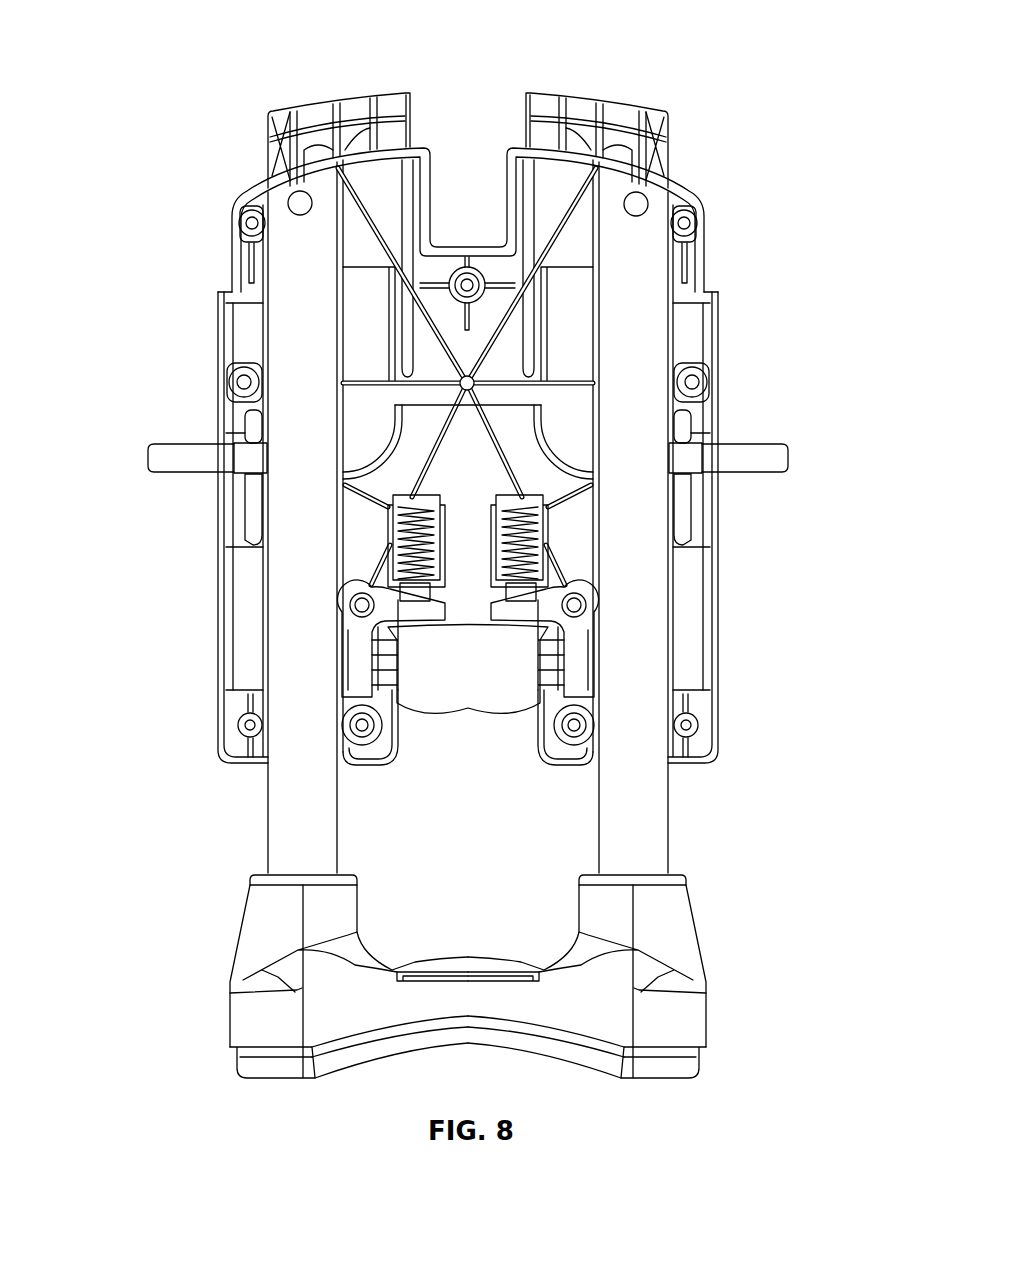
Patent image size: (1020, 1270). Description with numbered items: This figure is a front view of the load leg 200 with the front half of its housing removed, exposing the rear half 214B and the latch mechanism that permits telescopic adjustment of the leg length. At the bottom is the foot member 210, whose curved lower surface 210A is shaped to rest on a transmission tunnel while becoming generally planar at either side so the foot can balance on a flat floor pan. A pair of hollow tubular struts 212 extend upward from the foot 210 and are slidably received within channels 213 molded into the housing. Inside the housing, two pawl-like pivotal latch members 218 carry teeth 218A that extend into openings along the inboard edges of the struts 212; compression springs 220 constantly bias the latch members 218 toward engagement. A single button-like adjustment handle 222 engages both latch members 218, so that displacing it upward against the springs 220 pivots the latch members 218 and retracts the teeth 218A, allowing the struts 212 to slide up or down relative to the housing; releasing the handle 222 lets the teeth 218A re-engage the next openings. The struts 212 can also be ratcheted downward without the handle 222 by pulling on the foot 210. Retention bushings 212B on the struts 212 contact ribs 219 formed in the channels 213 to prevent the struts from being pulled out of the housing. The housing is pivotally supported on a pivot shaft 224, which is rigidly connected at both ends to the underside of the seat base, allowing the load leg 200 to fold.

The load leg 200 is at (738, 170).
The foot member 210 is at (615, 920).
The curved lower surface 210A is at (520, 1057).
The struts 212 is at (632, 822).
The retention bushings 212B is at (648, 210).
The channels 213 is at (600, 243).
The rear half 214B is at (230, 210).
The latch members 218 is at (582, 680).
The teeth 218A is at (613, 700).
The ribs 219 is at (700, 767).
The compression springs 220 is at (517, 537).
The adjustment handle 222 is at (490, 677).
The pivot shaft 224 is at (160, 444).